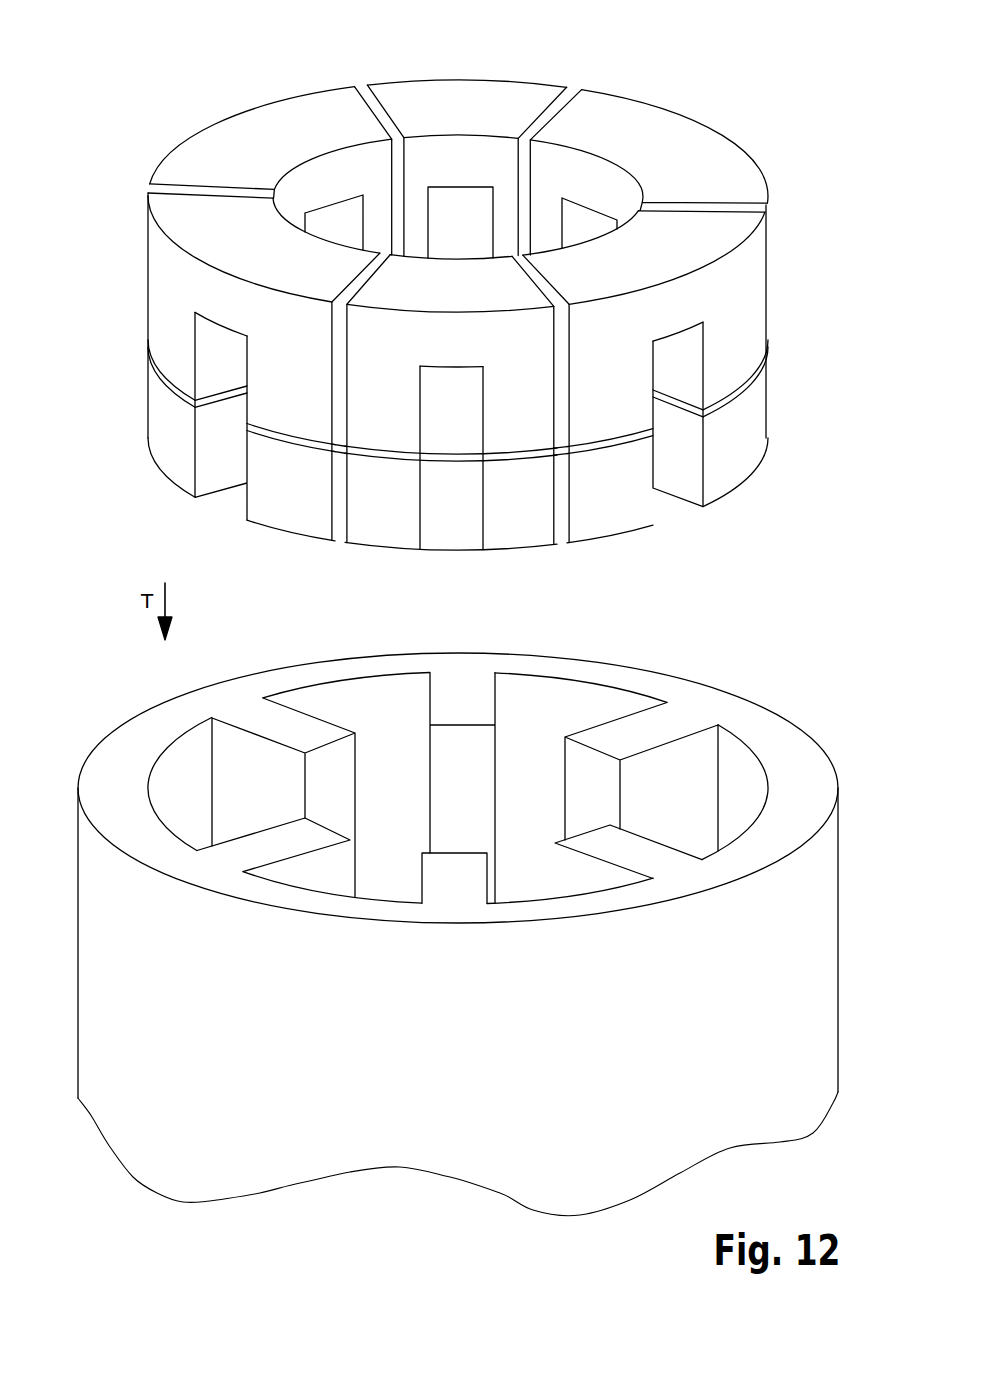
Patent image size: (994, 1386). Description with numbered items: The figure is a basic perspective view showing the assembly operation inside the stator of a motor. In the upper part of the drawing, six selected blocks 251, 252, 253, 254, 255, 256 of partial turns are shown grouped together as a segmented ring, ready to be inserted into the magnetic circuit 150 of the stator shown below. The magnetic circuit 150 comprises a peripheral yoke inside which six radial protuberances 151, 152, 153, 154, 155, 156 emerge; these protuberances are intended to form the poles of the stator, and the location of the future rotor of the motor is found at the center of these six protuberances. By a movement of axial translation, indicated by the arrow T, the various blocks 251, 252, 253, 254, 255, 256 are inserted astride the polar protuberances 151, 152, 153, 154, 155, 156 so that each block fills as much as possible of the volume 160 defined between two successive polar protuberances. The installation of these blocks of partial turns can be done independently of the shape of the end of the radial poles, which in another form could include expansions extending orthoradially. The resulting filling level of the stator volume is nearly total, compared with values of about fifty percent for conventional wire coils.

The magnetic circuit 150 is at (113, 787).
The radial protuberance 151 is at (300, 727).
The radial protuberance 152 is at (460, 700).
The radial protuberance 153 is at (627, 730).
The radial protuberance 154 is at (643, 852).
The radial protuberance 155 is at (453, 878).
The radial protuberance 156 is at (277, 845).
The volume 160 is at (178, 790).
The block 251 is at (275, 132).
The block 252 is at (467, 103).
The block 253 is at (667, 145).
The block 254 is at (693, 238).
The block 255 is at (440, 287).
The block 256 is at (213, 233).